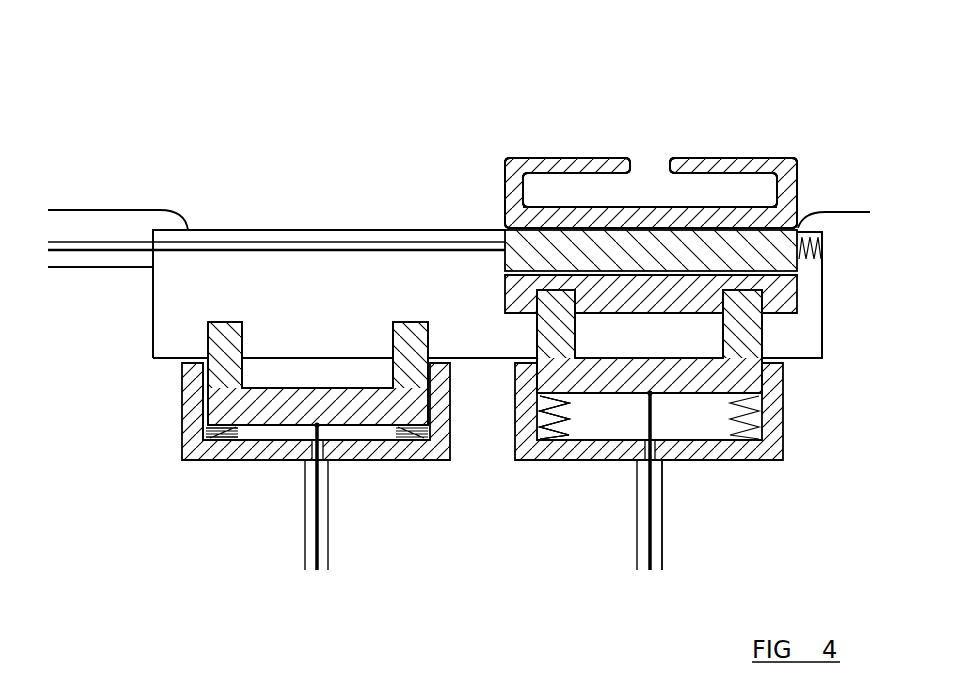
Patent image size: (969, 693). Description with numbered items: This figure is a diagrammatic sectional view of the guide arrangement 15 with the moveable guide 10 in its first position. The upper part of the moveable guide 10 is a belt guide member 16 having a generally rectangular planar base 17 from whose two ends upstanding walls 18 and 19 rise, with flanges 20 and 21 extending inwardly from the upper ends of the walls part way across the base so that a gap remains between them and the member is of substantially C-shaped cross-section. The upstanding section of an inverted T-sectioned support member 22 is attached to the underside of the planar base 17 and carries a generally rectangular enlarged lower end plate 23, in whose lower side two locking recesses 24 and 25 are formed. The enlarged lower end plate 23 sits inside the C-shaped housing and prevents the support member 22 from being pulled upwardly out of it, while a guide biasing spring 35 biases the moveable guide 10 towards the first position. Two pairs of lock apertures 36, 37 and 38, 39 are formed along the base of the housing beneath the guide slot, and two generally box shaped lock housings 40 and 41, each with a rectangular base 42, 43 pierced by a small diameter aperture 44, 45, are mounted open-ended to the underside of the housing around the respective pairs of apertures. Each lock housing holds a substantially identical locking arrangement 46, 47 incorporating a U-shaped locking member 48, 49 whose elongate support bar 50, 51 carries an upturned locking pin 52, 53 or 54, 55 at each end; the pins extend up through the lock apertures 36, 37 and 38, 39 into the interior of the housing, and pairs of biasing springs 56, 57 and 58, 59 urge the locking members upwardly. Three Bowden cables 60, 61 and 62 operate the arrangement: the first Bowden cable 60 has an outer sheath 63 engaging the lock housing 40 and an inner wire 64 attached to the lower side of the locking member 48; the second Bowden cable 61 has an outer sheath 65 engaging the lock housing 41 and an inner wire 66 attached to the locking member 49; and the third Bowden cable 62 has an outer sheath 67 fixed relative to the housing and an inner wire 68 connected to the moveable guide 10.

The moveable guide 10 is at (573, 155).
The guide arrangement 15 is at (145, 180).
The belt guide member 16 is at (798, 175).
The planar base 17 is at (697, 207).
The upstanding wall 18 is at (799, 195).
The upstanding wall 19 is at (505, 192).
The flange 20 is at (722, 155).
The flange 21 is at (538, 155).
The support member 22 is at (790, 262).
The enlarged lower end plate 23 is at (798, 293).
The locking recess 24 is at (762, 333).
The locking recess 25 is at (540, 290).
The guide biasing spring 35 is at (822, 245).
The lock aperture 36 is at (723, 398).
The lock aperture 37 is at (578, 398).
The lock aperture 38 is at (387, 430).
The lock aperture 39 is at (268, 406).
The lock housing 40 is at (755, 465).
The lock housing 41 is at (360, 464).
The rectangular base 42 is at (592, 462).
The rectangular base 43 is at (268, 457).
The small diameter aperture 44 is at (624, 462).
The small diameter aperture 45 is at (304, 461).
The locking arrangement 46 is at (697, 408).
The locking arrangement 47 is at (248, 432).
The U-shaped locking member 48 is at (585, 395).
The U-shaped locking member 49 is at (222, 430).
The elongate support bar 50 is at (627, 360).
The elongate support bar 51 is at (313, 388).
The locking pin 52 is at (782, 315).
The locking pin 53 is at (553, 340).
The locking pin 54 is at (425, 343).
The locking pin 55 is at (220, 343).
The biasing spring 56 is at (775, 420).
The biasing spring 57 is at (548, 398).
The biasing spring 58 is at (405, 455).
The biasing spring 59 is at (213, 440).
The first Bowden cable 60 is at (663, 532).
The second Bowden cable 61 is at (333, 512).
The third Bowden cable 62 is at (85, 268).
The outer sheath 63 is at (662, 557).
The inner wire 64 is at (652, 560).
The outer sheath 65 is at (333, 553).
The inner wire 66 is at (315, 563).
The outer sheath 67 is at (130, 268).
The inner wire 68 is at (209, 250).